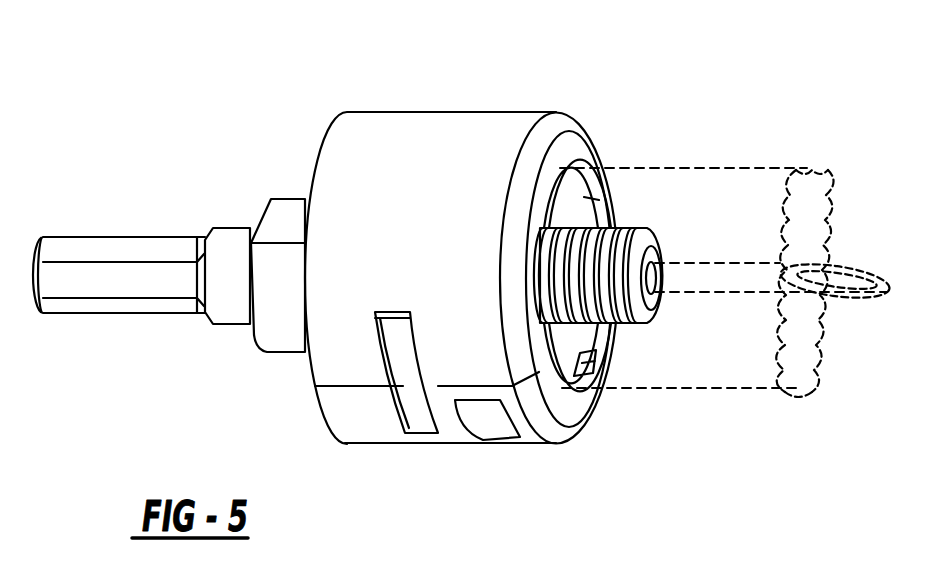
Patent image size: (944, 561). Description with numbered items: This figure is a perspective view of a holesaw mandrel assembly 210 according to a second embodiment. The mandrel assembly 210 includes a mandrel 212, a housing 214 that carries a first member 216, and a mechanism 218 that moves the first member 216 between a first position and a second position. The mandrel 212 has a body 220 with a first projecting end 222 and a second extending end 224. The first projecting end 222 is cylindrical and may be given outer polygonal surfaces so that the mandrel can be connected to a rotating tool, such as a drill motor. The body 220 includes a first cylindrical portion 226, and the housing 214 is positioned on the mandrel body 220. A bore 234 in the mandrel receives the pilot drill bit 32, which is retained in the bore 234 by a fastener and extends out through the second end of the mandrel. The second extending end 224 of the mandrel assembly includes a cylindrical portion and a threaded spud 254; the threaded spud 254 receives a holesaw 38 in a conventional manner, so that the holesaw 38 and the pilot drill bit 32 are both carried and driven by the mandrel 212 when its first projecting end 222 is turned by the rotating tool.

The mandrel assembly 210 is at (392, 275).
The mandrel 212 is at (243, 211).
The housing 214 is at (528, 275).
The first member 216 is at (556, 195).
The mechanism 218 is at (377, 408).
The body 220 is at (264, 339).
The first projecting end 222 is at (103, 288).
The second extending end 224 is at (627, 220).
The first cylindrical portion 226 is at (290, 337).
The bore 234 is at (664, 349).
The threaded spud 254 is at (593, 297).
The holesaw 38 is at (832, 193).
The pilot drill bit 32 is at (833, 252).